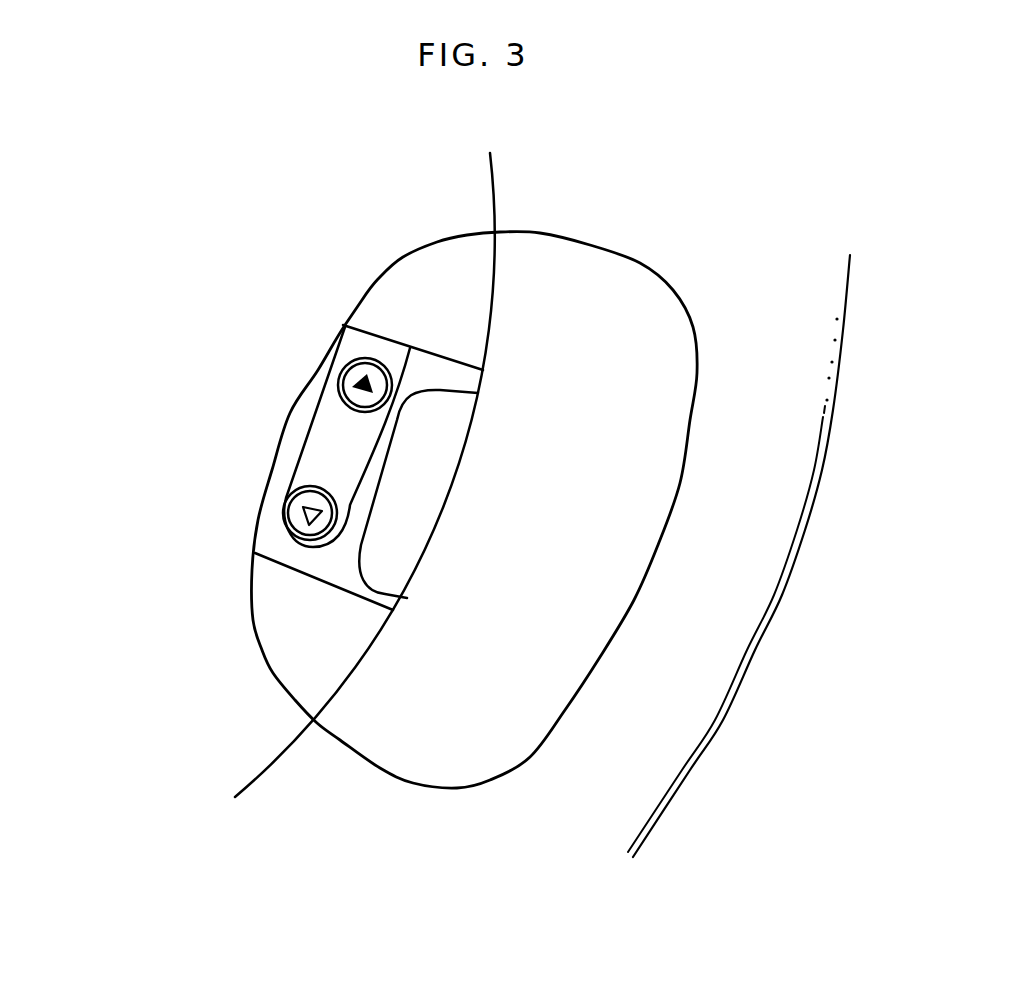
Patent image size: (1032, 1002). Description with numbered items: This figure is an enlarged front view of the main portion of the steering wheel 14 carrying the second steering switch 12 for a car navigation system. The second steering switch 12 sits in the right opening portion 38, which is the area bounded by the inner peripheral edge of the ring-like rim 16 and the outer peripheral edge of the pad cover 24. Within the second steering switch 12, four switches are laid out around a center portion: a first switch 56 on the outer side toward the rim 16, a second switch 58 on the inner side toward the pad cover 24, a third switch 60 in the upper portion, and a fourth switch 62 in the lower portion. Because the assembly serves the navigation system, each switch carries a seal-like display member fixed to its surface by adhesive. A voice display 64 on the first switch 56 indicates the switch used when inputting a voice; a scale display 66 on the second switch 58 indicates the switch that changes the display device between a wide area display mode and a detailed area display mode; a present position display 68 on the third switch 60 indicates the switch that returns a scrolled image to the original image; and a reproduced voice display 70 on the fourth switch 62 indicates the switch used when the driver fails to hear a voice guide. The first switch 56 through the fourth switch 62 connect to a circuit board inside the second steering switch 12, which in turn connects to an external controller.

The second steering switch 12 is at (385, 620).
The steering wheel 14 is at (721, 717).
The rim 16 is at (667, 757).
The pad cover 24 is at (253, 748).
The opening portion 38 is at (583, 677).
The first switch 56 is at (403, 553).
The second switch 58 is at (340, 492).
The third switch 60 is at (475, 253).
The fourth switch 62 is at (333, 682).
The voice display 64 is at (413, 493).
The scale display 66 is at (310, 503).
The present position display 68 is at (465, 312).
The reproduced voice display 70 is at (315, 642).